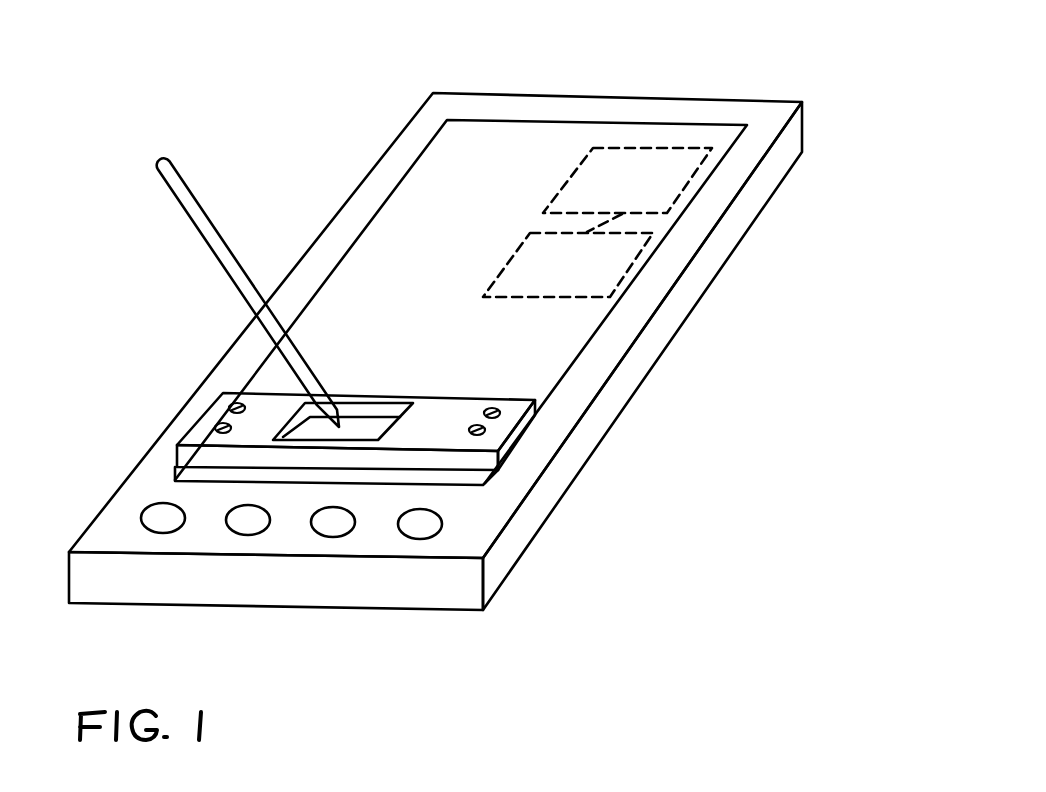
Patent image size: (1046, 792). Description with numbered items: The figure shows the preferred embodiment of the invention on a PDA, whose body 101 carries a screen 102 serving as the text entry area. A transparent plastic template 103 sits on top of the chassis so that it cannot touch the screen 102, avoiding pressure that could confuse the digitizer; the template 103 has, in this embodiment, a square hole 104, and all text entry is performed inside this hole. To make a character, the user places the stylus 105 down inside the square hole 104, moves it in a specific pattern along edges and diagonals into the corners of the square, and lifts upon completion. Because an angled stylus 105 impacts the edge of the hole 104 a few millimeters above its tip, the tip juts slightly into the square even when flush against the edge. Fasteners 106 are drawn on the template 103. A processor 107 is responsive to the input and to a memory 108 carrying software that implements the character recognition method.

The handheld device body 101 is at (435, 374).
The screen 102 is at (461, 301).
The transparent plastic template 103 is at (355, 421).
The square hole 104 is at (378, 412).
The stylus 105 is at (233, 272).
The screw holes 106 is at (196, 406).
The processor 107 is at (712, 182).
The memory 108 is at (650, 265).